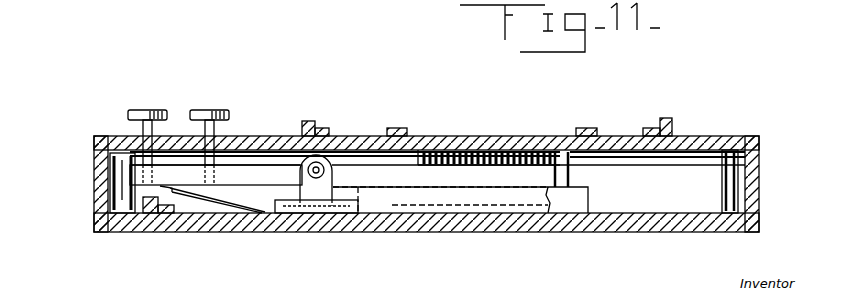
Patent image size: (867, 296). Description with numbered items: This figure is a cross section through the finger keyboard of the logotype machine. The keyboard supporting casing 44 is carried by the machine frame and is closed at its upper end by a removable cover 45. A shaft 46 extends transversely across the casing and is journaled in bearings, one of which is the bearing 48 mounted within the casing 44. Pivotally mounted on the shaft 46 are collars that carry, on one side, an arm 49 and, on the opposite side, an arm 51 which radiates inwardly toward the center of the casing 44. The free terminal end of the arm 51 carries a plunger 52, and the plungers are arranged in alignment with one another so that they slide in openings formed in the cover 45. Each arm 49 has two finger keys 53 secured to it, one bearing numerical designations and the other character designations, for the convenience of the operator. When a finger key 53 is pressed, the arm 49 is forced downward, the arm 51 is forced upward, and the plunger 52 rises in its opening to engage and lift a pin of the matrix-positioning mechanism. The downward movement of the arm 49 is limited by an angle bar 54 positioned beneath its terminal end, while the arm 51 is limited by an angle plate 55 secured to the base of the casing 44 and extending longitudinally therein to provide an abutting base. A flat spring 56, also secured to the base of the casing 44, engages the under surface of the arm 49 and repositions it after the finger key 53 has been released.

The keyboard supporting casing 44 is at (668, 232).
The removable cover 45 is at (697, 138).
The shaft 46 is at (323, 164).
The bearing 48 is at (318, 232).
The arm 49 is at (278, 167).
The arm 51 is at (460, 232).
The plunger 52 is at (471, 150).
The finger key 53 is at (148, 110).
The angle bar 54 is at (136, 232).
The angle plate 55 is at (553, 232).
The flat spring 56 is at (210, 232).